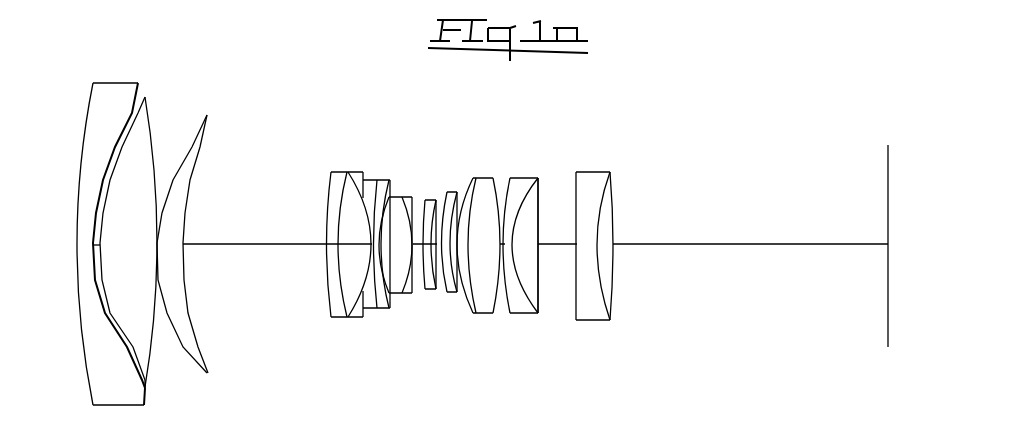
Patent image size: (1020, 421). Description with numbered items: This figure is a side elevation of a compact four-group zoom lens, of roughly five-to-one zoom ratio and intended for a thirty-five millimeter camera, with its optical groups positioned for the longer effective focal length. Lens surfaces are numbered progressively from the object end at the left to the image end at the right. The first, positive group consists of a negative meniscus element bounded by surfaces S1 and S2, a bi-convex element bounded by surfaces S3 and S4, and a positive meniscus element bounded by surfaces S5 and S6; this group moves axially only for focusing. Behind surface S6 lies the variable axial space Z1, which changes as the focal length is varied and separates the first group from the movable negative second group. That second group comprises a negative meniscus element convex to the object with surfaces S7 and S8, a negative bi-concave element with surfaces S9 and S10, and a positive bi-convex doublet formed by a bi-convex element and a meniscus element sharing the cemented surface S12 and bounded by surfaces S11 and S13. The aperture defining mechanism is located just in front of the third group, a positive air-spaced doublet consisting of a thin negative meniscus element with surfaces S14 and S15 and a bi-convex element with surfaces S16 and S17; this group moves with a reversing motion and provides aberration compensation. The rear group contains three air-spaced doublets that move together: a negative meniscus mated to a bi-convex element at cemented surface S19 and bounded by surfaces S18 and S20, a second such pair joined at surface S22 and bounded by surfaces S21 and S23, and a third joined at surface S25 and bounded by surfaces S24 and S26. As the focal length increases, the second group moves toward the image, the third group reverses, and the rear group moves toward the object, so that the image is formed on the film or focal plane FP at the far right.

The first lens surface S1 is at (88, 115).
The second lens surface S2 is at (147, 100).
The third lens surface S3 is at (148, 112).
The fourth lens surface S4 is at (152, 115).
The fifth lens surface S5 is at (190, 134).
The sixth lens surface S6 is at (200, 157).
The seventh lens surface S7 is at (328, 200).
The eighth lens surface S8 is at (338, 263).
The ninth lens surface S9 is at (350, 178).
The tenth lens surface S10 is at (377, 180).
The eleventh lens surface S11 is at (379, 308).
The twelfth lens surface S12 is at (413, 197).
The thirteenth lens surface S13 is at (404, 295).
The fourteenth lens surface S14 is at (428, 200).
The fifteenth lens surface S15 is at (441, 198).
The sixteenth lens surface S16 is at (450, 192).
The seventeenth lens surface S17 is at (456, 293).
The eighteenth lens surface S18 is at (462, 303).
The nineteenth lens surface S19 is at (480, 313).
The twentieth lens surface S20 is at (506, 188).
The twenty-first lens surface S21 is at (520, 178).
The twenty-second lens surface S22 is at (520, 313).
The twenty-third lens surface S23 is at (540, 288).
The twenty-fourth lens surface S24 is at (580, 188).
The twenty-fifth lens surface S25 is at (598, 212).
The twenty-sixth lens surface S26 is at (616, 231).
The variable axial space Z1 is at (253, 244).
The focal plane FP is at (888, 180).